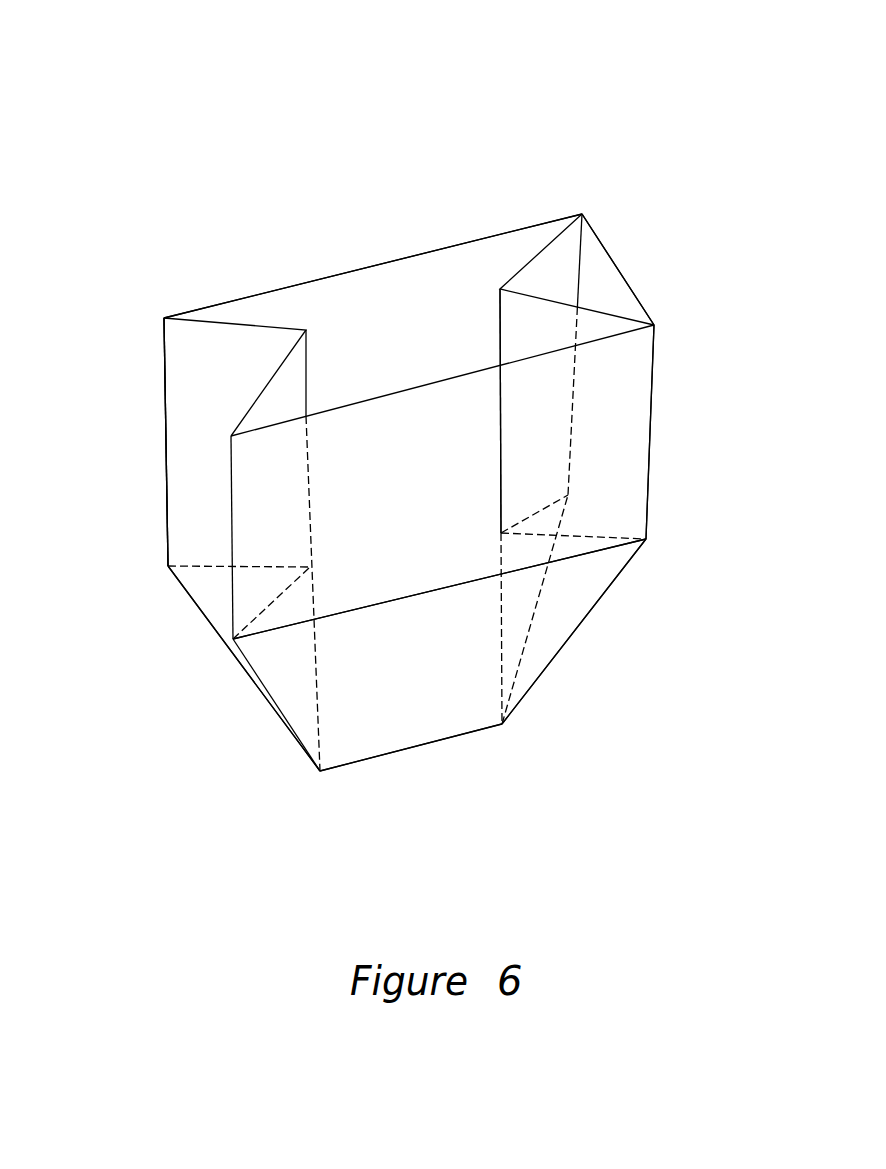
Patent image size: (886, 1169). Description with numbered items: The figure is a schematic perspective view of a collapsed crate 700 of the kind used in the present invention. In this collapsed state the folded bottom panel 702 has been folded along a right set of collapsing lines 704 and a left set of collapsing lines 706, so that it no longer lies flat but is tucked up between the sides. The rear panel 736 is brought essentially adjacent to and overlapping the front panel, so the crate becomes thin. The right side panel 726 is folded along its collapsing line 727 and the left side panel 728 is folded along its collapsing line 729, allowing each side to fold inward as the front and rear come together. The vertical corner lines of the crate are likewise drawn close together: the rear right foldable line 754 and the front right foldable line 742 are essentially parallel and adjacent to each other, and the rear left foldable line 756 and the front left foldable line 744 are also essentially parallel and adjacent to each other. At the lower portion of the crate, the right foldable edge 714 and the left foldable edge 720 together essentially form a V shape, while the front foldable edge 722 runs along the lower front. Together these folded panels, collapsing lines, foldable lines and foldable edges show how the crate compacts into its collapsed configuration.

The collapsed crate 700 is at (122, 70).
The folded bottom panel 702 is at (375, 693).
The right set of collapsing lines 704 is at (567, 645).
The left set of collapsing lines 706 is at (247, 673).
The right foldable edge 714 is at (547, 507).
The left foldable edge 720 is at (190, 568).
The front foldable edge 722 is at (427, 596).
The right side panel 726 is at (557, 263).
The collapsing line 727 is at (497, 315).
The left side panel 728 is at (223, 355).
The collapsing line 729 is at (307, 357).
The rear panel 736 is at (392, 297).
The front right (FR) foldable line 742 is at (647, 517).
The front left (FL) foldable line 744 is at (231, 490).
The rear right (RR) foldable line 754 is at (583, 235).
The rear left (RL) foldable line 756 is at (165, 366).